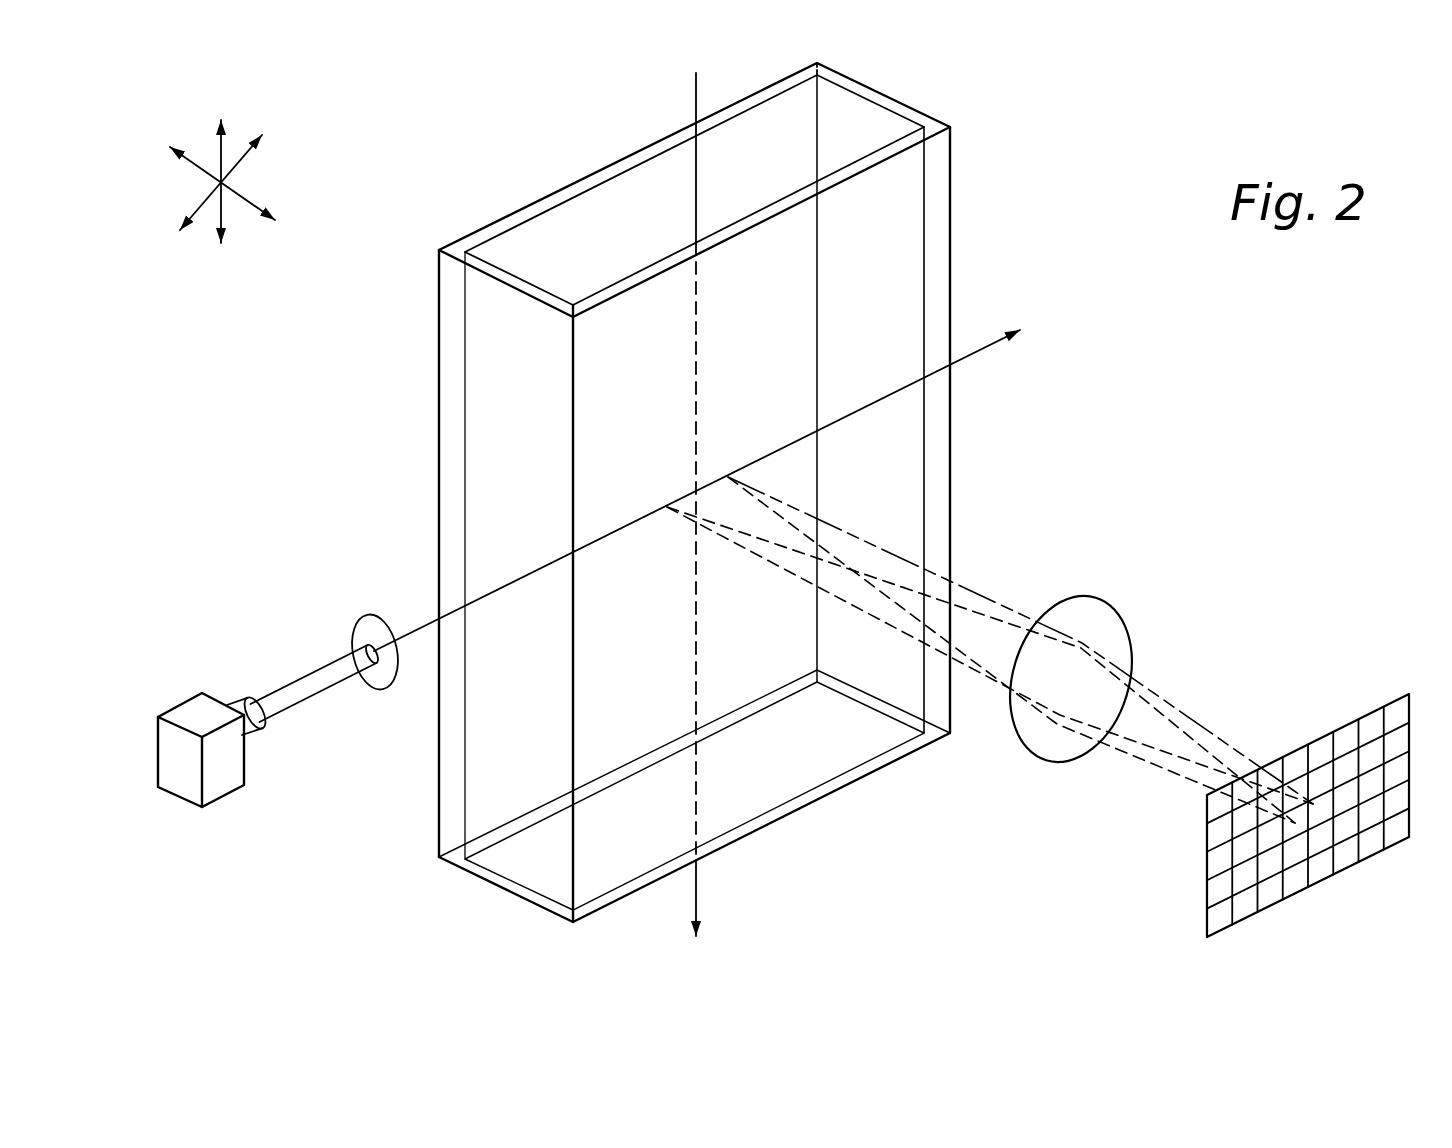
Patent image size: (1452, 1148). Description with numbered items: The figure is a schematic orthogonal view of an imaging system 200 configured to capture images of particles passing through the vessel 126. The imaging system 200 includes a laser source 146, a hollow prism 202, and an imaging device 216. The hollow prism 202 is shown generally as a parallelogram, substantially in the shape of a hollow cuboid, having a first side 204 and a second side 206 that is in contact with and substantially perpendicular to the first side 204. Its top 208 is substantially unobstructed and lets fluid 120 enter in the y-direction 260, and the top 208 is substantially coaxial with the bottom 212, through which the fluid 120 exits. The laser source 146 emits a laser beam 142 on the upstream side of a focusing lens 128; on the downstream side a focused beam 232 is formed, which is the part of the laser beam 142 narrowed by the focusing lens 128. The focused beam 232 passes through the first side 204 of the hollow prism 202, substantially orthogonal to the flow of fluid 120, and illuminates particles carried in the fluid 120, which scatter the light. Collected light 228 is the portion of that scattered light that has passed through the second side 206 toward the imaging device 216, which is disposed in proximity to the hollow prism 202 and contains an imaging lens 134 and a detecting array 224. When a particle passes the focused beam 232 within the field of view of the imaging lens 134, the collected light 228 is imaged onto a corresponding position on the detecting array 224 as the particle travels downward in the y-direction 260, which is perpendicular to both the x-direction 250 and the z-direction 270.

The fluid 120 is at (693, 88).
The vessel 126 is at (421, 560).
The focusing lens 128 is at (358, 617).
The imaging lens 134 is at (1105, 600).
The laser beam 142 is at (313, 672).
The laser source 146 is at (222, 797).
The imaging system 200 is at (298, 347).
The hollow prism 202 is at (568, 156).
The first side 204 is at (485, 427).
The second side 206 is at (905, 257).
The top 208 is at (585, 235).
The bottom 212 is at (787, 765).
The imaging device 216 is at (1232, 620).
The detecting array 224 is at (1207, 863).
The collected light 228 is at (1008, 608).
The focused beam 232 is at (788, 444).
The x-direction 250 is at (241, 196).
The y-direction 260 is at (222, 165).
The z-direction 270 is at (239, 166).